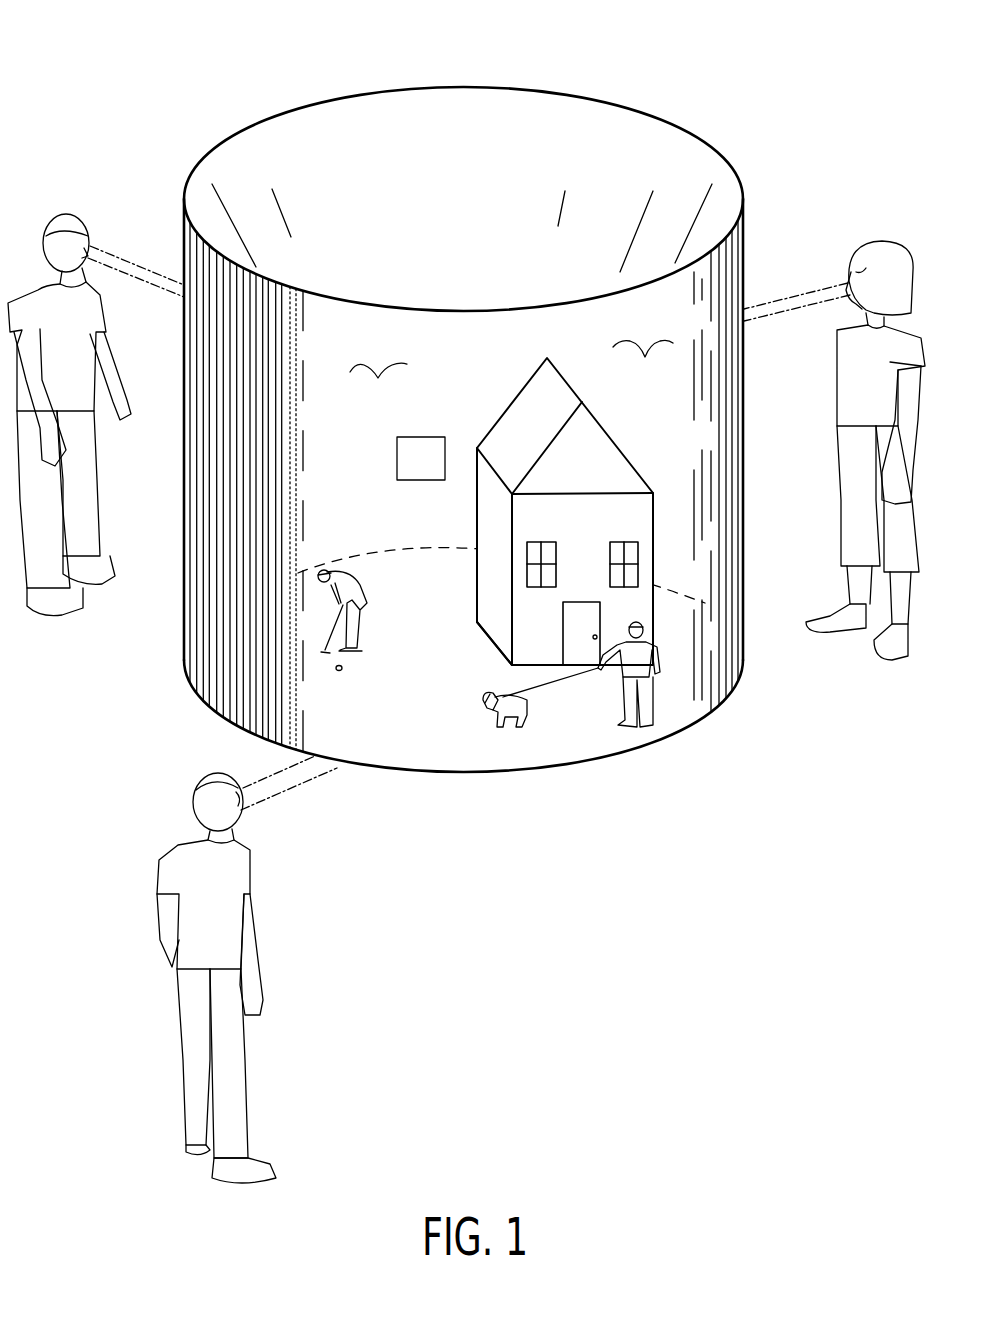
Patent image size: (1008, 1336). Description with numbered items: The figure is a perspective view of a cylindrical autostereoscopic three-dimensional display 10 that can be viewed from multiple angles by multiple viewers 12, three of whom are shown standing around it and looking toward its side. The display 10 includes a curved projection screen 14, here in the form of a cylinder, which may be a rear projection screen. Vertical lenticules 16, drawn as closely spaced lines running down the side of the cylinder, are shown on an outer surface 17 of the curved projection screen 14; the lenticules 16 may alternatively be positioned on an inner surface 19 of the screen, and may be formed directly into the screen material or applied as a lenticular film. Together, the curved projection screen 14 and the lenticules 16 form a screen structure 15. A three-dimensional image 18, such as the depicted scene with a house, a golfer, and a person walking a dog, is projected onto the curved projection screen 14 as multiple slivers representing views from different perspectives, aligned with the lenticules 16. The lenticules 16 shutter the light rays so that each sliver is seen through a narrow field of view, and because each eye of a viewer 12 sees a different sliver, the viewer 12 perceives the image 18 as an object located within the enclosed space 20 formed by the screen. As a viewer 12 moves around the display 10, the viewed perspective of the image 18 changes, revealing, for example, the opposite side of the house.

The 3D display 10 is at (233, 101).
The viewer 12 is at (83, 211).
The curved projection screen 14 is at (745, 222).
The screen structure 15 is at (663, 113).
The lenticules 16 is at (192, 679).
The outer surface 17 is at (751, 265).
The 3D image 18 is at (434, 468).
The inner surface 19 is at (579, 104).
The enclosed space 20 is at (353, 134).